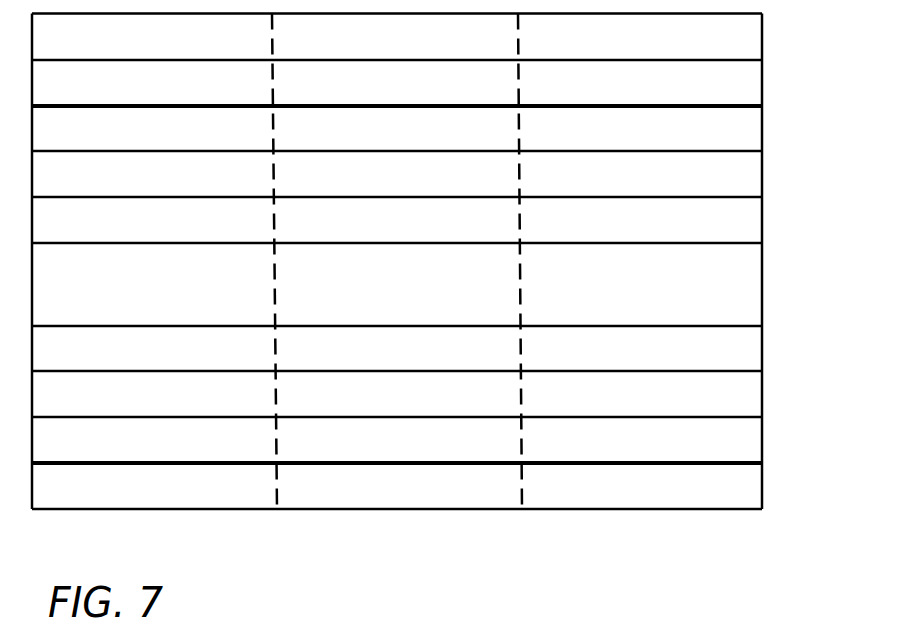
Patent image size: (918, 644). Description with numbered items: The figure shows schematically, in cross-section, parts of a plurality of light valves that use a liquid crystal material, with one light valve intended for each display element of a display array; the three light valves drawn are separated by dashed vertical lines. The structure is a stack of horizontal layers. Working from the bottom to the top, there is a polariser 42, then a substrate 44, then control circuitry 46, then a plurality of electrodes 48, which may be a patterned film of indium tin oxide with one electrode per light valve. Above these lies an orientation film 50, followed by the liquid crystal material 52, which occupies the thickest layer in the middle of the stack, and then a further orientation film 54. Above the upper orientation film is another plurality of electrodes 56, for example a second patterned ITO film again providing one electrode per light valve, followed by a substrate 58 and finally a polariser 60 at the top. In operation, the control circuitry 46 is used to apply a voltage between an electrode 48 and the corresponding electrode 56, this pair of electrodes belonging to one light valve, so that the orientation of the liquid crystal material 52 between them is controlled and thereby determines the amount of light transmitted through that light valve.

The polariser 42 is at (762, 487).
The substrate 44 is at (762, 443).
The control circuitry 46 is at (762, 393).
The plurality of electrodes 48 is at (762, 350).
The orientation film 50 is at (762, 287).
The liquid crystal material 52 is at (762, 227).
The orientation film 54 is at (762, 179).
The plurality of electrodes 56 is at (762, 131).
The substrate 58 is at (762, 84).
The polariser 60 is at (762, 38).